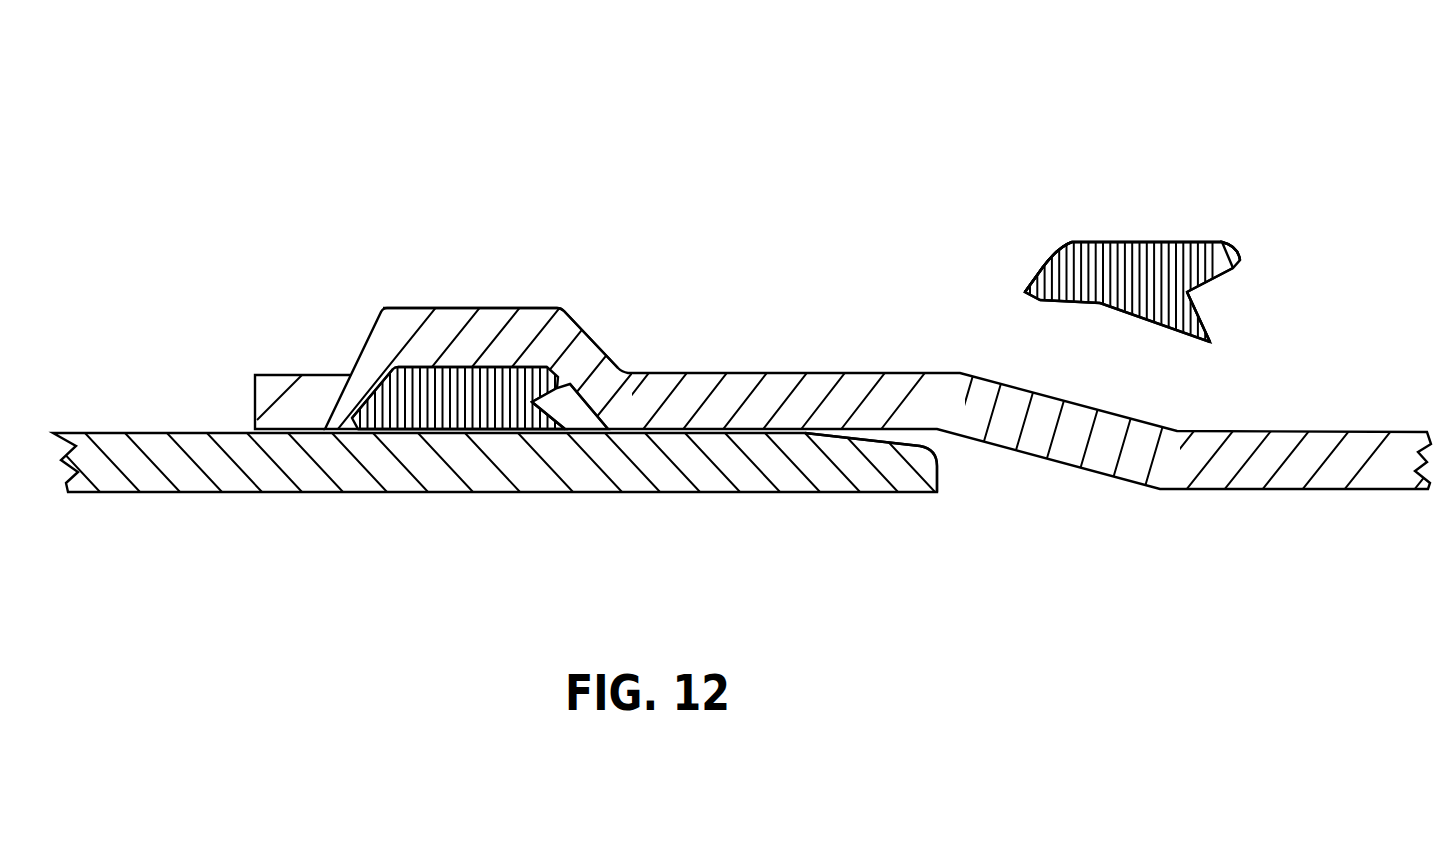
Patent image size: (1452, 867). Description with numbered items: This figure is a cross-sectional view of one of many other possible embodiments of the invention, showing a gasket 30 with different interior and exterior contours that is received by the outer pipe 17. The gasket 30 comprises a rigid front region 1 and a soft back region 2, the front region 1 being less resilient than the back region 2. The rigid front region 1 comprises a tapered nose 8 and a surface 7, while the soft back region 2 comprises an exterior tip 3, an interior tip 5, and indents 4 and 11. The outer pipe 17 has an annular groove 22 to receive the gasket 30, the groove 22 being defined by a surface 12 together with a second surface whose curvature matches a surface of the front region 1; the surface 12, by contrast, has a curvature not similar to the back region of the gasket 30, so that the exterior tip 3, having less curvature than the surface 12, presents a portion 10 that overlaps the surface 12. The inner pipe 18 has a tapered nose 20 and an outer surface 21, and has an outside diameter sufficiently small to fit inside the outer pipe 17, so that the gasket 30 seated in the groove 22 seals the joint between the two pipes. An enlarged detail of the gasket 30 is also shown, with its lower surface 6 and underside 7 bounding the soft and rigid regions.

The rigid front region 1 is at (362, 396).
The soft back region 2 is at (477, 390).
The exterior tip 3 is at (548, 390).
The indent 4 is at (1190, 291).
The interior tip 5 is at (541, 433).
The bottom surface 6 is at (1154, 324).
The surface 7 is at (1072, 306).
The tapered nose 8 is at (1027, 296).
The portion of exterior tip 10 is at (1242, 259).
The indent 11 is at (1190, 293).
The surface 12 is at (613, 363).
The outer pipe 17 is at (730, 398).
The inner pipe 18 is at (342, 472).
The tapered nose 20 is at (870, 440).
The outer surface 21 is at (473, 423).
The annular groove 22 is at (585, 425).
The gasket 30 is at (1148, 118).